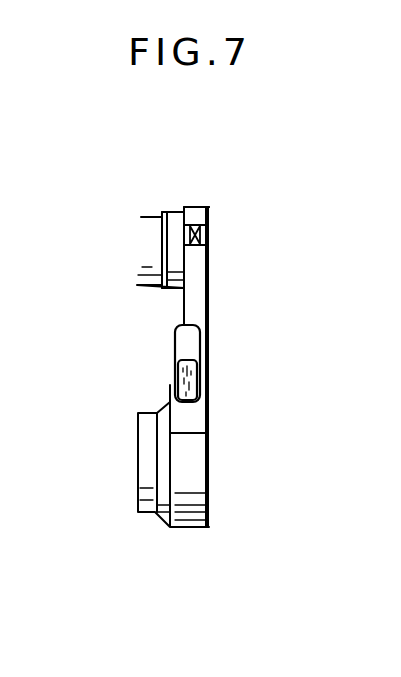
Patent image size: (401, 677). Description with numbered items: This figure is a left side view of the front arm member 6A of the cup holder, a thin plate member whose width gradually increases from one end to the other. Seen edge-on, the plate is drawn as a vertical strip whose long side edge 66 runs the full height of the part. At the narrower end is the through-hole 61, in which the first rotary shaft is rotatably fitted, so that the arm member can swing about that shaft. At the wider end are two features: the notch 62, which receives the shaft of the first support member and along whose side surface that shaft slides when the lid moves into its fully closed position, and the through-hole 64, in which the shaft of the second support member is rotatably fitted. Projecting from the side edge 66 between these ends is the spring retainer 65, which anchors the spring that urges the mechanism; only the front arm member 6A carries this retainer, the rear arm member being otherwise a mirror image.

The front arm member 6A is at (197, 207).
The through-hole 61 is at (145, 470).
The notch 62 is at (210, 231).
The through-hole 64 is at (140, 252).
The spring retainer 65 is at (175, 380).
The side edge 66 is at (198, 315).